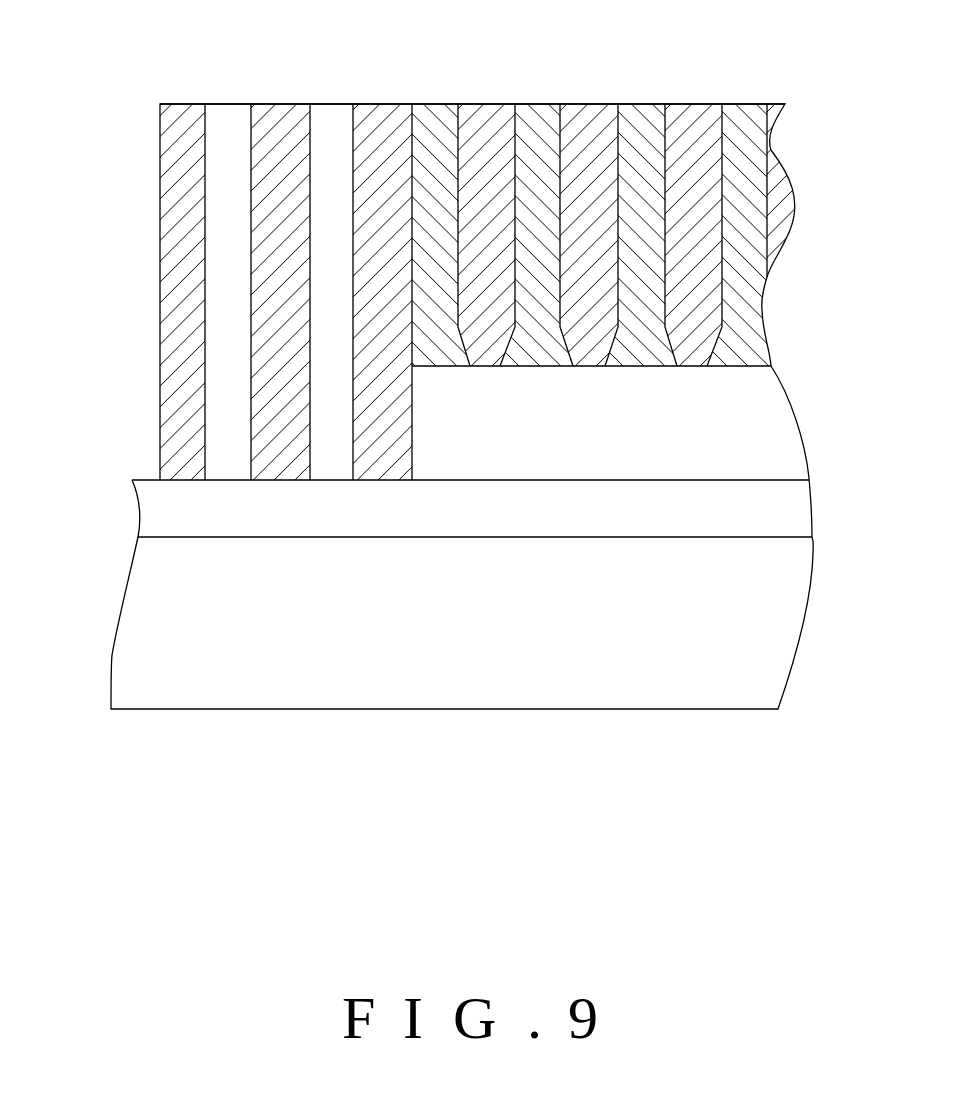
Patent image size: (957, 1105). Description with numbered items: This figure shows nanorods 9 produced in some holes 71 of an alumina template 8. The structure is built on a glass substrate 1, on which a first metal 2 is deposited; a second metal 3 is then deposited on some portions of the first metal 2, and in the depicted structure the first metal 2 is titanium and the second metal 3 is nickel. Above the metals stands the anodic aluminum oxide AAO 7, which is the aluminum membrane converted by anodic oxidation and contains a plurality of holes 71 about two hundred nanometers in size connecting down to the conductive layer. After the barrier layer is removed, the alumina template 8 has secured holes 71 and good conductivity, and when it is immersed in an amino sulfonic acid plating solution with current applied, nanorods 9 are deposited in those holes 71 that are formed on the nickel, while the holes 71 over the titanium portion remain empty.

The substrate 1 is at (130, 635).
The first metal 2 is at (153, 503).
The second metal 3 is at (757, 423).
The anodic aluminum oxide AAO 7 is at (180, 257).
The holes 71 is at (333, 118).
The alumina template 8 is at (150, 83).
The nanorods 9 is at (540, 117).